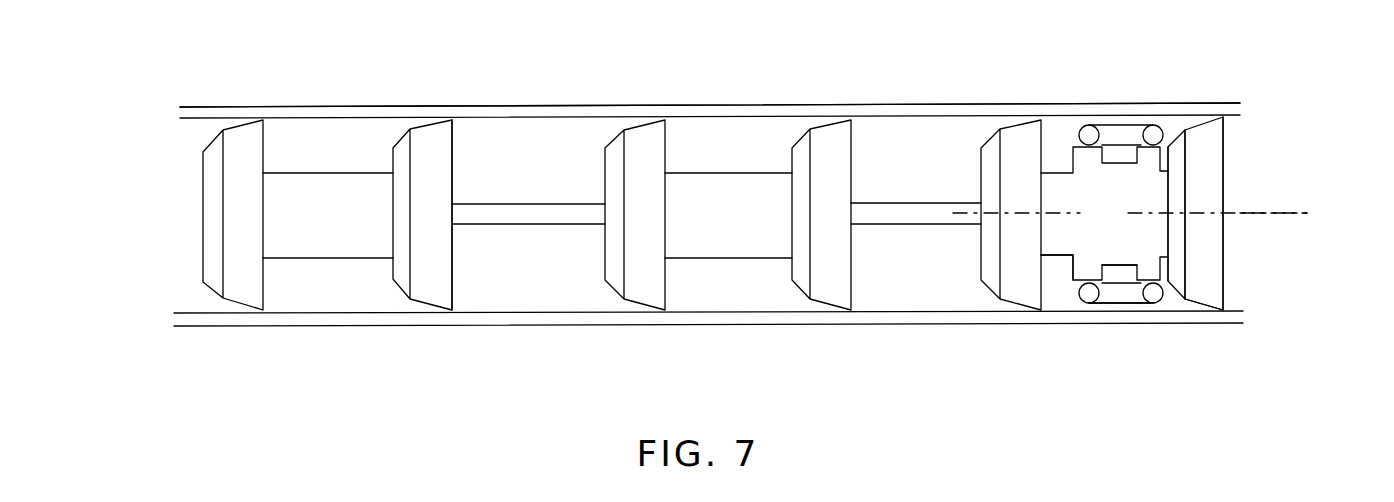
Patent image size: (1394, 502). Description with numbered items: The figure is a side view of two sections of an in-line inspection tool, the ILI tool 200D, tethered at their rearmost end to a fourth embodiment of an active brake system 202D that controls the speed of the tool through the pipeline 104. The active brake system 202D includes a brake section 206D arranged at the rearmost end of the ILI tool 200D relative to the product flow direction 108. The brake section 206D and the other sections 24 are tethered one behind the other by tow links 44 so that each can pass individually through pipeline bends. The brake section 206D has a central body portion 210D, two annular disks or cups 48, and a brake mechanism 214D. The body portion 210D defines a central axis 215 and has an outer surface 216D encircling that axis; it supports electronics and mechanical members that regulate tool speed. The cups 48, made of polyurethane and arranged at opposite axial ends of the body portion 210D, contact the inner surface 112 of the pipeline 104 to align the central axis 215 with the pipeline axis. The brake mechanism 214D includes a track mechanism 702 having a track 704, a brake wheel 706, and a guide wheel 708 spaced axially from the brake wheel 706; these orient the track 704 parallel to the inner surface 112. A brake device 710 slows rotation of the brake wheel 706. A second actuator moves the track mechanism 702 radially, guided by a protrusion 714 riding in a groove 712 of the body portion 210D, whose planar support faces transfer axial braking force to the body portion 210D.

The ILI tool 200D is at (141, 143).
The annular disks or cups 48 is at (205, 143).
The sections 24 is at (345, 138).
The inner surface 112 is at (497, 125).
The tow links 44 is at (520, 202).
The pipeline 104 is at (513, 327).
The central body portion 210D is at (1052, 170).
The brake device 710 is at (1090, 128).
The brake wheel 706 is at (1100, 133).
The track 704 is at (1130, 123).
The guide wheel 708 is at (1168, 128).
The brake section 206D is at (1236, 164).
The central axis 215 is at (1260, 213).
The product flow direction 108 is at (1283, 234).
The outer surface 216D is at (1130, 213).
The brake mechanism 214D is at (1061, 299).
The groove 712 is at (1118, 257).
The track mechanism 702 is at (1130, 307).
The protrusion 714 is at (1226, 305).
The active brake system 202D is at (1260, 278).